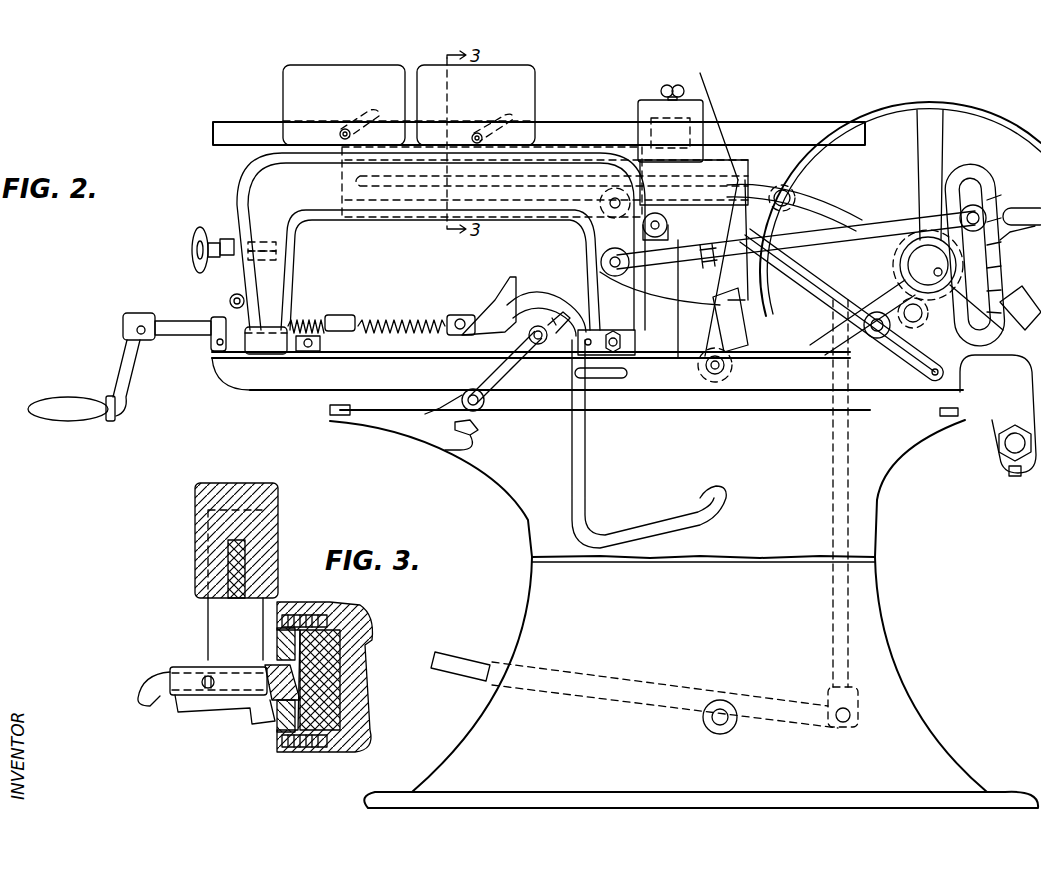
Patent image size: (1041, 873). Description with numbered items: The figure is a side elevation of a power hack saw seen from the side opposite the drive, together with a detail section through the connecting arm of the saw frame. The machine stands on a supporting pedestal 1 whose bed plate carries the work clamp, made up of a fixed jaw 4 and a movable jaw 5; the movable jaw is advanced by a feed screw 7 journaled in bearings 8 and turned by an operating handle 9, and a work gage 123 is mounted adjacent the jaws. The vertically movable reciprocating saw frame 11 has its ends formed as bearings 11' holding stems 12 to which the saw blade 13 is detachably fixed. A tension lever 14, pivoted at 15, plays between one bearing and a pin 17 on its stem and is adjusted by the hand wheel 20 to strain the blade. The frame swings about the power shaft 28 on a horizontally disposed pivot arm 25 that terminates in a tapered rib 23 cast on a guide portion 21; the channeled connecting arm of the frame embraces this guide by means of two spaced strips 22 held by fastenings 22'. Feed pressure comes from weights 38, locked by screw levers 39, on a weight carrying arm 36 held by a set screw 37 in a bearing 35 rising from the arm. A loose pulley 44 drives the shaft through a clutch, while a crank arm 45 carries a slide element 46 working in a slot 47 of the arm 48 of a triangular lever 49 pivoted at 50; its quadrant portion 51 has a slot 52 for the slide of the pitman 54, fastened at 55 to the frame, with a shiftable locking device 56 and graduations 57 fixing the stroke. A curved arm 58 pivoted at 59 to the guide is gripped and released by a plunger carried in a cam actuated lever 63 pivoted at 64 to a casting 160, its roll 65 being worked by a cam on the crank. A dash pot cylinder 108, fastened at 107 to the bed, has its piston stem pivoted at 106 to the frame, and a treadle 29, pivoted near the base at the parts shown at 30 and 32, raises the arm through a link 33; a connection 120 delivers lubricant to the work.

In FIG. 2, the supporting pedestal 1 is at (882, 606).
In FIG. 2, the fixed jaw 4 is at (546, 300).
In FIG. 2, the movable jaw 5 is at (505, 290).
In FIG. 2, the feed screw 7 is at (410, 320).
In FIG. 2, the bearings 8 is at (214, 318).
In FIG. 2, the operating handle 9 is at (122, 351).
In FIG. 2, the saw frame 11 is at (419, 241).
In FIG. 3, the saw frame 11 is at (340, 677).
In FIG. 2, the bearings 11' is at (214, 383).
In FIG. 2, the stems 12 is at (303, 350).
In FIG. 2, the saw blade 13 is at (350, 345).
In FIG. 2, the tension lever 14 is at (222, 240).
In FIG. 2, the pivot 15 is at (250, 301).
In FIG. 2, the pin 17 is at (210, 346).
In FIG. 2, the hand wheel 20 is at (191, 251).
In FIG. 2, the guide portion 21 is at (750, 166).
In FIG. 3, the guide portion 21 is at (352, 712).
In FIG. 3, the spaced strips 22 is at (269, 662).
In FIG. 3, the fastenings 22' is at (307, 679).
In FIG. 3, the tapered rib 23 is at (268, 670).
In FIG. 2, the pivot arm 25 is at (815, 206).
In FIG. 3, the pivot arm 25 is at (157, 675).
In FIG. 2, the power shaft 28 is at (929, 243).
In FIG. 2, the treadle 29 is at (462, 655).
In FIG. 2, the pivot 30 is at (724, 712).
In FIG. 2, the bracket 32 is at (851, 721).
In FIG. 2, the link 33 is at (832, 352).
In FIG. 2, the bearing 35 is at (650, 100).
In FIG. 3, the bearing 35 is at (207, 636).
In FIG. 2, the weight carrying arm 36 is at (593, 130).
In FIG. 3, the weight carrying arm 36 is at (230, 570).
In FIG. 2, the set screw 37 is at (678, 86).
In FIG. 2, the weights 38 is at (283, 88).
In FIG. 3, the weights 38 is at (280, 500).
In FIG. 2, the screw levers 39 is at (364, 110).
In FIG. 2, the pulley 44 is at (946, 108).
In FIG. 2, the crank arm 45 is at (974, 262).
In FIG. 2, the slide element 46 is at (841, 308).
In FIG. 2, the slot 47 is at (920, 374).
In FIG. 2, the arm 48 is at (890, 377).
In FIG. 2, the triangular lever 49 is at (996, 420).
In FIG. 2, the pivot 50 is at (1008, 456).
In FIG. 2, the quadrant portion 51 is at (1006, 254).
In FIG. 2, the slot 52 is at (981, 209).
In FIG. 2, the pitman 54 is at (886, 210).
In FIG. 2, the fastening point 55 is at (601, 261).
In FIG. 2, the shiftable locking device 56 is at (1020, 238).
In FIG. 2, the indications 57 is at (1020, 304).
In FIG. 2, the curved arm 58 is at (636, 341).
In FIG. 2, the pivot 59 is at (601, 210).
In FIG. 2, the cam actuated lever 63 is at (716, 268).
In FIG. 2, the pivot 64 is at (668, 225).
In FIG. 2, the roll 65 is at (886, 334).
In FIG. 2, the pivot 106 is at (800, 200).
In FIG. 2, the fastening 107 is at (726, 367).
In FIG. 2, the cylinder 108 is at (742, 320).
In FIG. 2, the connection 120 is at (586, 470).
In FIG. 2, the work gage 123 is at (505, 366).
In FIG. 2, the casting 160 is at (660, 298).